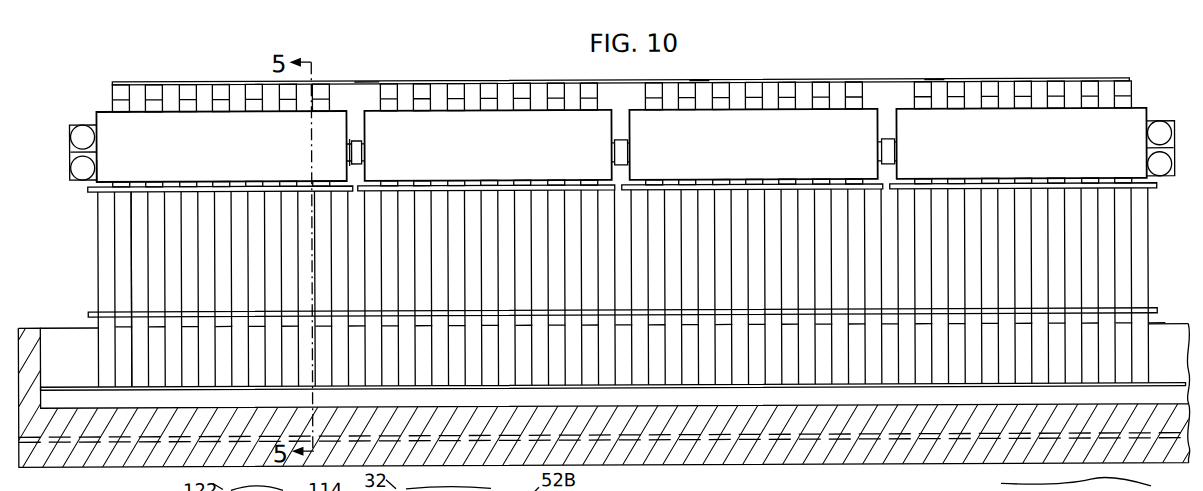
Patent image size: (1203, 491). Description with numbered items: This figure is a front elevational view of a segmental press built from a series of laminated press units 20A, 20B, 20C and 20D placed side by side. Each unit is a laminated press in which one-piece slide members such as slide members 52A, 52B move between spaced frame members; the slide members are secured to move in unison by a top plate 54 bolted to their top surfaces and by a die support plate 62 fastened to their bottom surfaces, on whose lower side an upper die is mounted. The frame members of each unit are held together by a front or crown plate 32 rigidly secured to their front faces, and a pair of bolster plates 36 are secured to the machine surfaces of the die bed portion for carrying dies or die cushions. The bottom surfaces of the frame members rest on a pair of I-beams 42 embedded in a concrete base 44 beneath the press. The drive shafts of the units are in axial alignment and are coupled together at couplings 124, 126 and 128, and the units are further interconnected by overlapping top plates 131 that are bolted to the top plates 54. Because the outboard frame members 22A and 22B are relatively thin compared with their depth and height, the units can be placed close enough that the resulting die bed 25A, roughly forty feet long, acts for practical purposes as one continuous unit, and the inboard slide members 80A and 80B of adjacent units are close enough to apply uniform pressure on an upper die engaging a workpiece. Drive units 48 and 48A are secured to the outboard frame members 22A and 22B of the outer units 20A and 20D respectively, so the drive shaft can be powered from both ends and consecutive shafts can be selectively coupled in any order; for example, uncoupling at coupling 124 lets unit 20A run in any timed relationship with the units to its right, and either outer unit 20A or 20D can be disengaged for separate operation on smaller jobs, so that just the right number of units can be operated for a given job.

The laminated press unit 20A is at (221, 146).
The laminated press unit 20B is at (487, 145).
The laminated press unit 20C is at (753, 144).
The laminated press unit 20D is at (1021, 143).
The outboard frame member 22A is at (103, 250).
The outboard frame member 22B is at (1149, 245).
The die bed 25A is at (108, 315).
The front or crown plate 32 is at (103, 165).
The bolster plate 36 is at (123, 310).
The I-beam 42 is at (55, 398).
The concrete base 44 is at (90, 452).
The drive means 48 is at (80, 133).
The drive unit 48A is at (1160, 129).
The slide member 52A is at (118, 92).
The slide member 52B is at (322, 92).
The top plate 54 is at (200, 82).
The die support plate 62 is at (105, 193).
The inboard slide member 80A is at (322, 182).
The inboard slide member 80B is at (388, 183).
The drive shaft coupling 124 is at (353, 140).
The drive shaft coupling 126 is at (620, 142).
The drive shaft coupling 128 is at (888, 142).
The overlapping top plate 131 is at (415, 82).